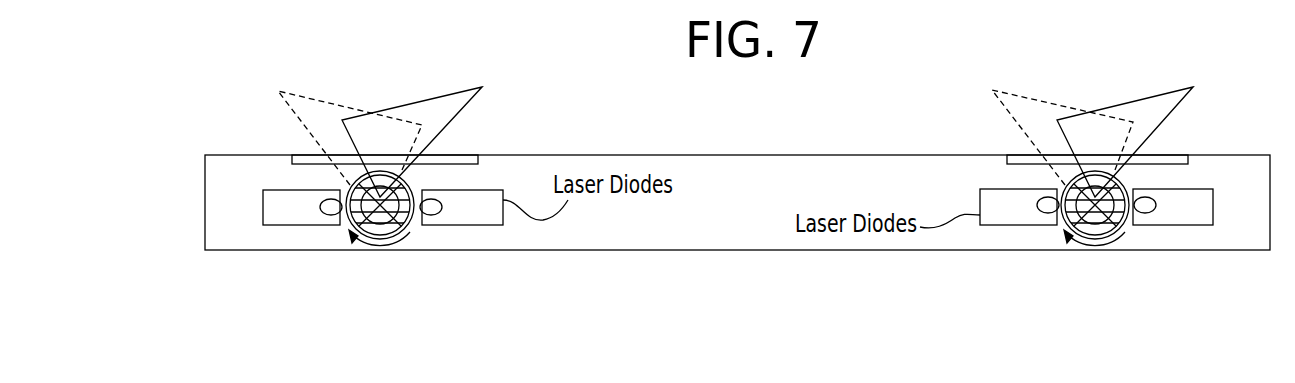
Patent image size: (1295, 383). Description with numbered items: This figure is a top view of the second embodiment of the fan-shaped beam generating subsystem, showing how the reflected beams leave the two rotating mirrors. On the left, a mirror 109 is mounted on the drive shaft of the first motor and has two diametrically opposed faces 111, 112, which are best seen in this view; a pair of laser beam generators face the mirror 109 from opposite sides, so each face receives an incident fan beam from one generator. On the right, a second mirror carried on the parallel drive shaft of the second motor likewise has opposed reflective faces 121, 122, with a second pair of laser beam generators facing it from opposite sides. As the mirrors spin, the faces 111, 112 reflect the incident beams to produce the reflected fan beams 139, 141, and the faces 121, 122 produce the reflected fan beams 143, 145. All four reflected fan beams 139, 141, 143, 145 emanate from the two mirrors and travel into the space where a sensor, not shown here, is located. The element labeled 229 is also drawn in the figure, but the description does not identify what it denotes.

The mirror 109 is at (330, 219).
The reflective face 111 is at (422, 224).
The reflective face 112 is at (358, 188).
The reflective face 121 is at (1133, 218).
The reflective face 122 is at (1074, 188).
The reflected fan beam 139 is at (313, 112).
The reflected fan beam 141 is at (440, 110).
The reflected fan beam 143 is at (1035, 108).
The reflected fan beam 145 is at (1162, 113).
The housing 229 is at (1043, 239).